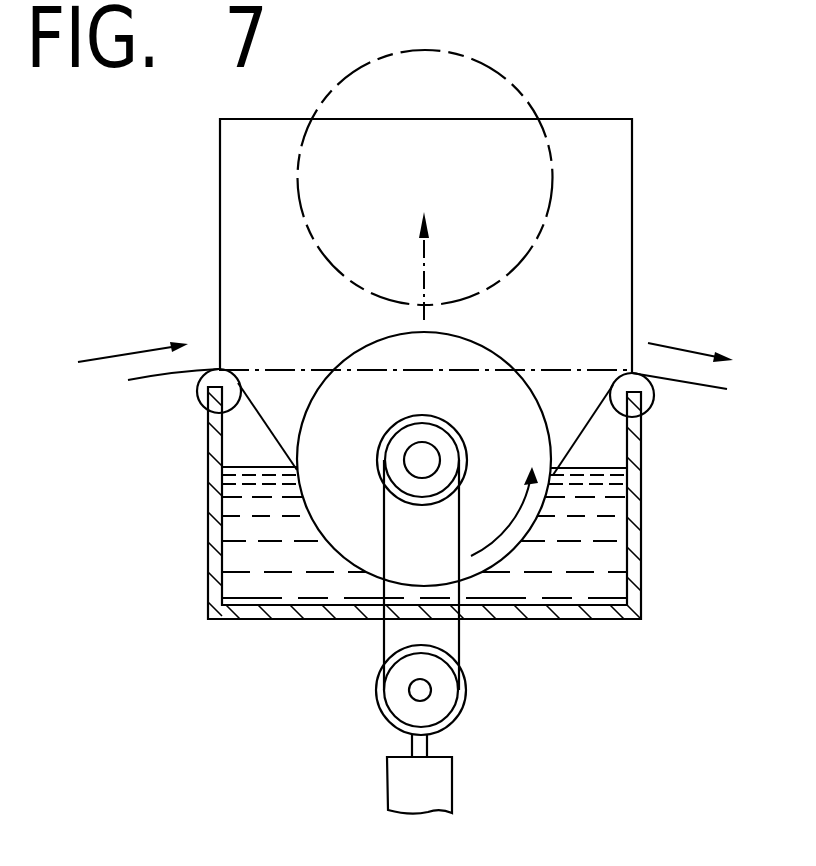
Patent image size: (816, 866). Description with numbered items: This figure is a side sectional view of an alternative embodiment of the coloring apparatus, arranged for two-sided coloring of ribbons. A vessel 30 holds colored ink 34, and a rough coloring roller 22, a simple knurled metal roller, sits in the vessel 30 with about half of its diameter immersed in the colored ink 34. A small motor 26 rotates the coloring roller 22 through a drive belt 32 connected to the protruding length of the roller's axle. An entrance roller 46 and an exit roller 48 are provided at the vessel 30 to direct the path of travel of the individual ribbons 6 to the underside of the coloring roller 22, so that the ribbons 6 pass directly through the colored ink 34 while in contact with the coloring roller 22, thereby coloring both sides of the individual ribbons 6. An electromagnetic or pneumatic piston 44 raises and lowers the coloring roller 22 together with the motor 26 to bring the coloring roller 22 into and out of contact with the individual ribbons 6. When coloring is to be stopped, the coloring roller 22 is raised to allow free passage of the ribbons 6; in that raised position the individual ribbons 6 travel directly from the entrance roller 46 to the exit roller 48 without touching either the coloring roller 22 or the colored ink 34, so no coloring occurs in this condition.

The individual ribbons 6 is at (590, 371).
The coloring roller 22 is at (525, 262).
The motor 26 is at (465, 700).
The vessel 30 is at (641, 548).
The drive belt 32 is at (459, 637).
The colored ink 34 is at (230, 525).
The electromagnetic or pneumatic piston 44 is at (452, 790).
The entrance roller 46 is at (201, 398).
The exit roller 48 is at (654, 400).